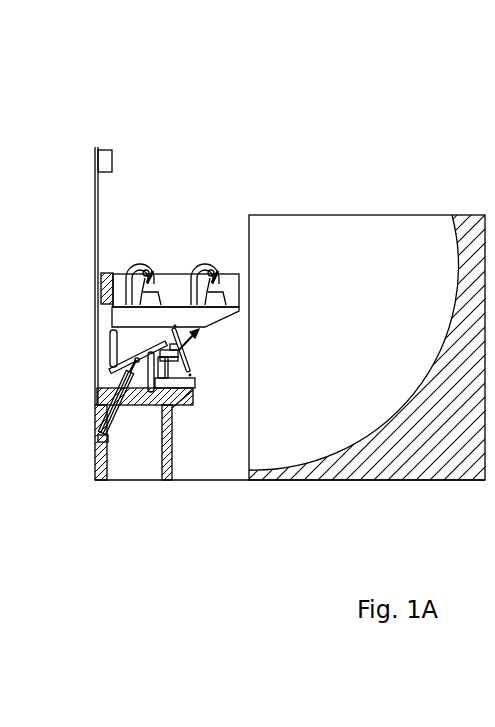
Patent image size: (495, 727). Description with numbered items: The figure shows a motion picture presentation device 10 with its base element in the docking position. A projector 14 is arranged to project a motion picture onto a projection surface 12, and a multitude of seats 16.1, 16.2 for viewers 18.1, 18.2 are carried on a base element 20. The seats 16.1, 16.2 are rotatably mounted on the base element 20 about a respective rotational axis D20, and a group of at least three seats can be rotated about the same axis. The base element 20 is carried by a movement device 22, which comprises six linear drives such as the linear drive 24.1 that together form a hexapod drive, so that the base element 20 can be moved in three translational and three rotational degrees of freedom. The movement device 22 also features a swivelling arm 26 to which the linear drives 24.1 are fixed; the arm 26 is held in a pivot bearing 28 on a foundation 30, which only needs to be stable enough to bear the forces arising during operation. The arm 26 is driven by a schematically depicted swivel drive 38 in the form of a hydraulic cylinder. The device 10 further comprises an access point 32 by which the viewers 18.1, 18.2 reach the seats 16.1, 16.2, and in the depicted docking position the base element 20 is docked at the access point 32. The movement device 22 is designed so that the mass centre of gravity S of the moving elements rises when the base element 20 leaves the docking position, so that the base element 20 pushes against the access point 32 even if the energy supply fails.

The motion picture presentation device 10 is at (455, 94).
The projection surface 12 is at (448, 246).
The projector 14 is at (105, 158).
The seat 16.1 is at (135, 263).
The seat 16.2 is at (197, 266).
The viewer 18.1 is at (170, 254).
The viewer 18.2 is at (210, 270).
The base element 20 is at (142, 318).
The rotational axis D20 is at (140, 298).
The movement device 22 is at (209, 370).
The linear drive 24.1 is at (107, 367).
The swivelling arm 26 is at (140, 375).
The pivot bearing 28 is at (166, 358).
The foundation 30 is at (149, 356).
The access point 32 is at (104, 275).
The swivel drive 38 is at (96, 414).
The mass centre of gravity S is at (167, 315).